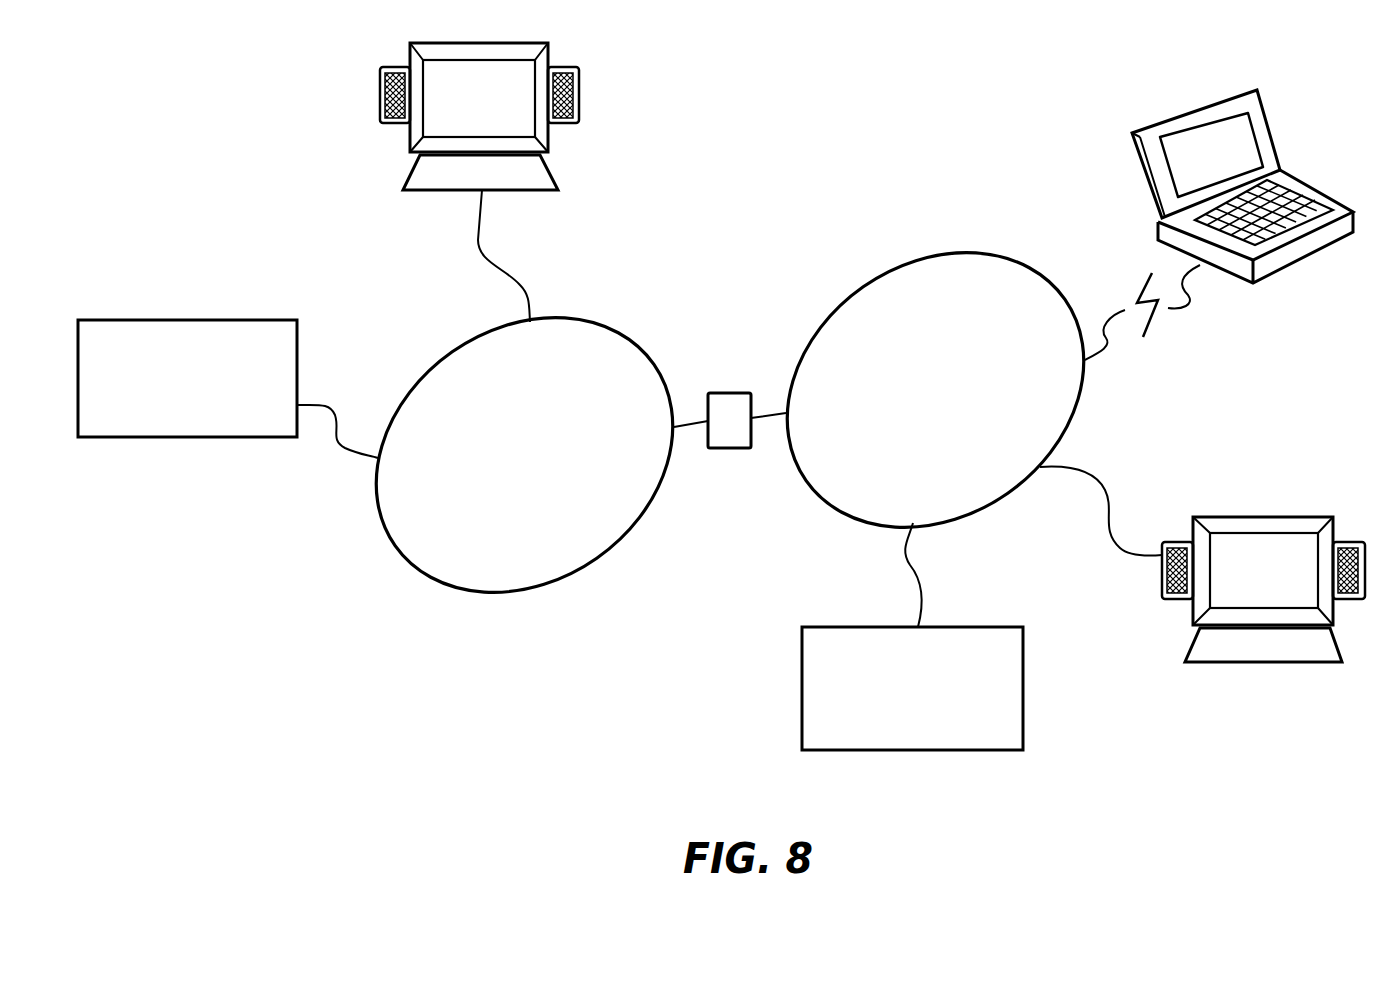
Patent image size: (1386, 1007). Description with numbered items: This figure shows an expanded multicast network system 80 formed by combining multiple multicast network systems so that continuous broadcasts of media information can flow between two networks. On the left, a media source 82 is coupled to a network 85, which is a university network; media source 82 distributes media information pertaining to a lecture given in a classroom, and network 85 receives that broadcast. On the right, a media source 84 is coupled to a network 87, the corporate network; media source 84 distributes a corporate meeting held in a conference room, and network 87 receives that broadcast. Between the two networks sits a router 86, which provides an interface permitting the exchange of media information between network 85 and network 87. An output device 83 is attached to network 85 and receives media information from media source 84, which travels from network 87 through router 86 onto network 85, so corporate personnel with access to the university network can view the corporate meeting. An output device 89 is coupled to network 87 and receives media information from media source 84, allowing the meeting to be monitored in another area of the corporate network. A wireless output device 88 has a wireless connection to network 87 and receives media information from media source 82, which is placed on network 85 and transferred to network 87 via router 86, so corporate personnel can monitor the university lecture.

The expanded multicast network system 80 is at (1267, 783).
The media source 82 is at (297, 333).
The output device 83 is at (579, 80).
The media source 84 is at (1023, 660).
The network 85 is at (447, 585).
The router 86 is at (738, 393).
The network 87 is at (967, 257).
The wireless output device 88 is at (1258, 90).
The output device 89 is at (1303, 517).